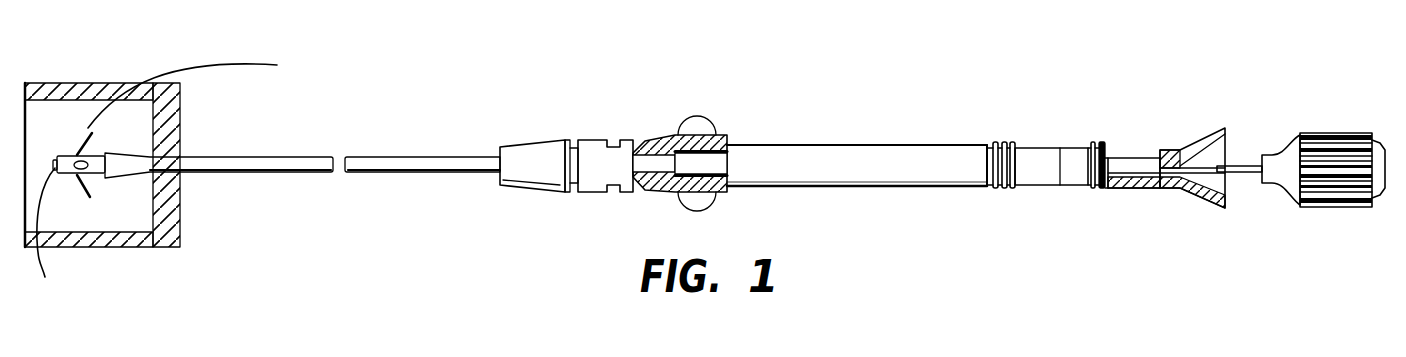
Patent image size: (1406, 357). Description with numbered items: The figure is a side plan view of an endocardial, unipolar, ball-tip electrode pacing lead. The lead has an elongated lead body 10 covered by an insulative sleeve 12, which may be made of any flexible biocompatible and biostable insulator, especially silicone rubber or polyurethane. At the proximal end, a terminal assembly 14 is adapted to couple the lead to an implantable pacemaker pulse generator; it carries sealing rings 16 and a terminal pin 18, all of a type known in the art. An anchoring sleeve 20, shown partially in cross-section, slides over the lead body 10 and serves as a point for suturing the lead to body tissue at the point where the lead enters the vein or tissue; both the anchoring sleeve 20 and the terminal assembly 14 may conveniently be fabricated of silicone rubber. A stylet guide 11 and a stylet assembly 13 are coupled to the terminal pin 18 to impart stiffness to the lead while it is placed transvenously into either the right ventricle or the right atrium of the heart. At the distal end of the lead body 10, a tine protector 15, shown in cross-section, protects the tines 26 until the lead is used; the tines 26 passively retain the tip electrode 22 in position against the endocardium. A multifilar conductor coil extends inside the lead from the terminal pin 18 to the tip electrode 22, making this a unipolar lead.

The lead body 10 is at (330, 144).
The stylet guide 11 is at (1195, 199).
The insulative sleeve 12 is at (468, 153).
The stylet assembly 13 is at (1278, 152).
The terminal assembly 14 is at (1033, 135).
The tine protector 15 is at (160, 245).
The sealing rings 16 is at (1098, 187).
The terminal pin 18 is at (1127, 160).
The anchoring sleeve 20 is at (632, 137).
The tip electrode 22 is at (71, 222).
The tines 26 is at (195, 104).